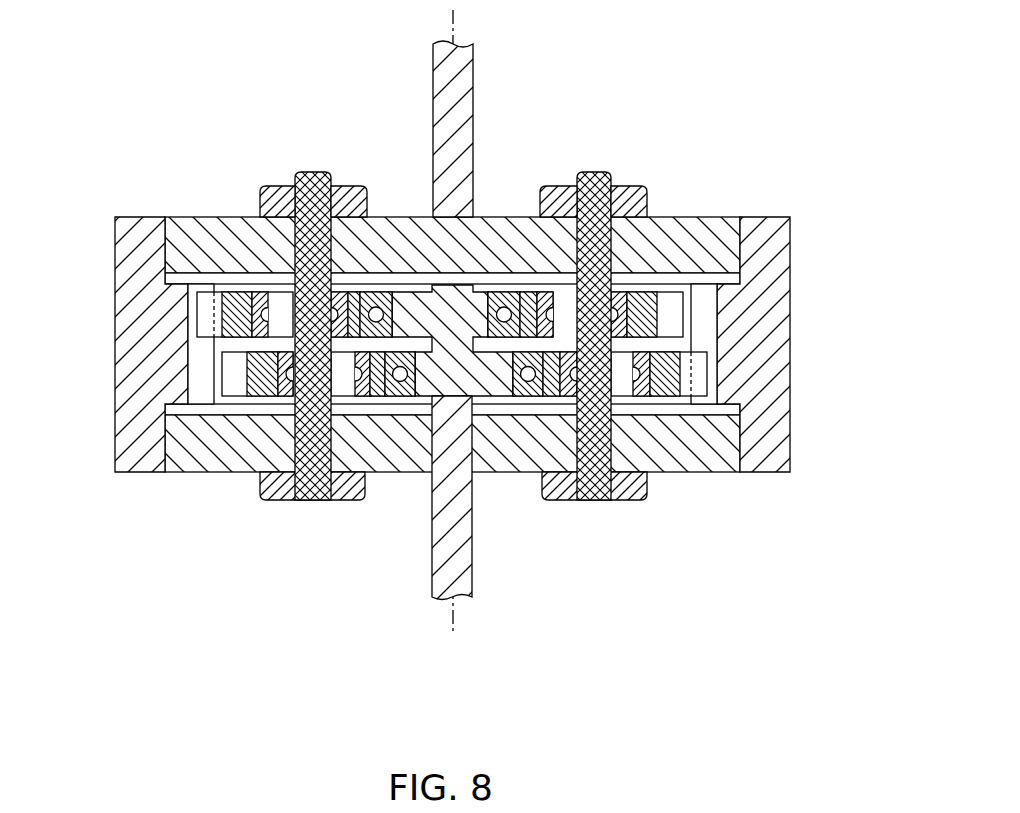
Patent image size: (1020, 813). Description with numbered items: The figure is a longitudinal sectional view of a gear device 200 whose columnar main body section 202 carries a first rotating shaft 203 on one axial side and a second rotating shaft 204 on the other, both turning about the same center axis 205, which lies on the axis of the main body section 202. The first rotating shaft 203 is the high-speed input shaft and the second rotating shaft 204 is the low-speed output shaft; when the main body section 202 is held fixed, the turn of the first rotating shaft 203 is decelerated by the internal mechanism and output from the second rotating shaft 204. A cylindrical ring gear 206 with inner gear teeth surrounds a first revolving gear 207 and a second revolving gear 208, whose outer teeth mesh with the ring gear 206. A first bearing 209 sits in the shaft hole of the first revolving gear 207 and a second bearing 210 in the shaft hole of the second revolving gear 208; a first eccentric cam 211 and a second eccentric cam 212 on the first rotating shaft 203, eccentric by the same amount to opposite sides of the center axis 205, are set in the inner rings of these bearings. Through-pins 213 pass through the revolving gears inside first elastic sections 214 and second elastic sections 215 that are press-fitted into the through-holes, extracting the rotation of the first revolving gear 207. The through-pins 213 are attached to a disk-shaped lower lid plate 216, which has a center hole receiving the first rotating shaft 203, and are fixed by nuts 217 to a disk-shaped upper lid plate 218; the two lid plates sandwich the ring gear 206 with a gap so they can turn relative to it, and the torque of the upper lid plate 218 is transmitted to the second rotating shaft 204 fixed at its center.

The gear device 200 is at (646, 86).
The main body section 202 is at (100, 170).
The first rotating shaft 203 is at (463, 563).
The second rotating shaft 204 is at (443, 83).
The center axis 205 is at (450, 17).
The ring gear 206 is at (133, 473).
The first revolving gear 207 is at (682, 376).
The second revolving gear 208 is at (660, 312).
The first bearing 209 is at (405, 418).
The second bearing 210 is at (495, 297).
The first eccentric cam 211 is at (493, 382).
The second eccentric cam 212 is at (407, 305).
The through-pins 213 is at (313, 172).
The first elastic sections 214 is at (287, 393).
The second elastic sections 215 is at (257, 292).
The lower lid plate 216 is at (203, 466).
The nuts 217 is at (277, 186).
The upper lid plate 218 is at (385, 217).